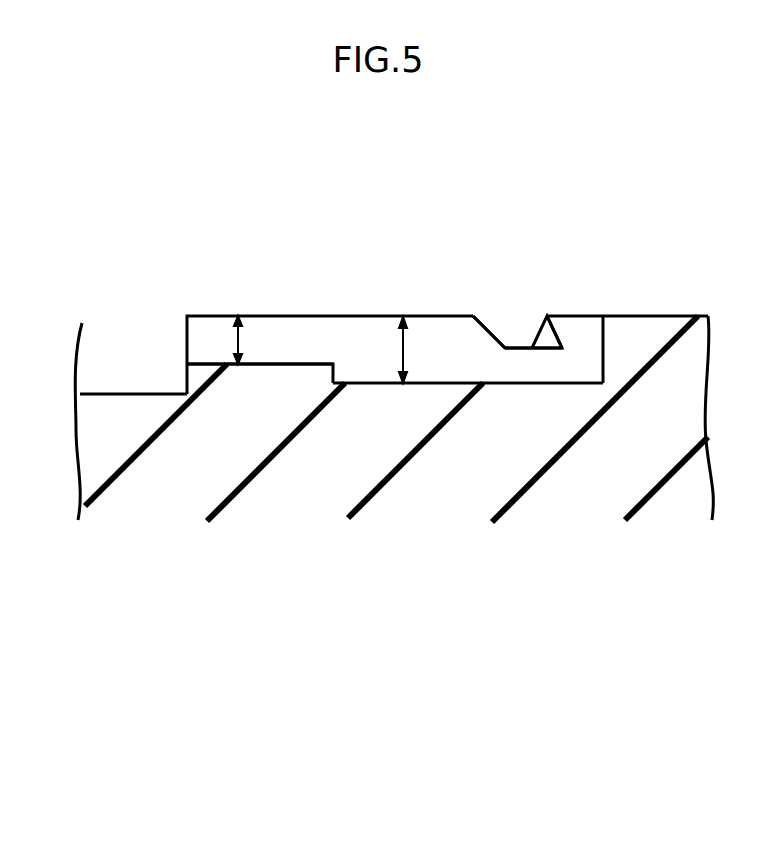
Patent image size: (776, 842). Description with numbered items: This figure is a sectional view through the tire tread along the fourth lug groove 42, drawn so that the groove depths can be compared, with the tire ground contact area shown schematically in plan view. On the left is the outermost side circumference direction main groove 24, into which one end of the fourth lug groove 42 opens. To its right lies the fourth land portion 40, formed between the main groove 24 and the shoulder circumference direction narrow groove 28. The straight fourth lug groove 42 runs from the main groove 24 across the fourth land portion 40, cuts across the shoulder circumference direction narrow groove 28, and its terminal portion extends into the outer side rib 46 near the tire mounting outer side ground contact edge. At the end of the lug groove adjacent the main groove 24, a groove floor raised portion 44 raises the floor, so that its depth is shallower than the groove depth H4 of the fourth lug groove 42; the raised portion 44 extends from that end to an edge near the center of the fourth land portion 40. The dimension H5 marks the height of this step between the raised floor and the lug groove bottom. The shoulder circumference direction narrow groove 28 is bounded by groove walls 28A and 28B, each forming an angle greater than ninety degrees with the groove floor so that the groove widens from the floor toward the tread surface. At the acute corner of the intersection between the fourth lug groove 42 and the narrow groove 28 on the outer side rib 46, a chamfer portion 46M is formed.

The outermost side circumference direction main groove 24 is at (129, 394).
The fourth land portion 40 is at (344, 316).
The fourth lug groove 42 is at (447, 383).
The groove floor raised portion 44 is at (285, 364).
The outer side rib 46 is at (650, 316).
The chamfer portion 46M is at (550, 337).
The shoulder circumference direction narrow groove 28 is at (508, 348).
The groove wall 28A is at (489, 332).
The groove wall 28B is at (519, 348).
The groove depth of the fourth lug groove H4 is at (399, 348).
The height H5 is at (235, 340).